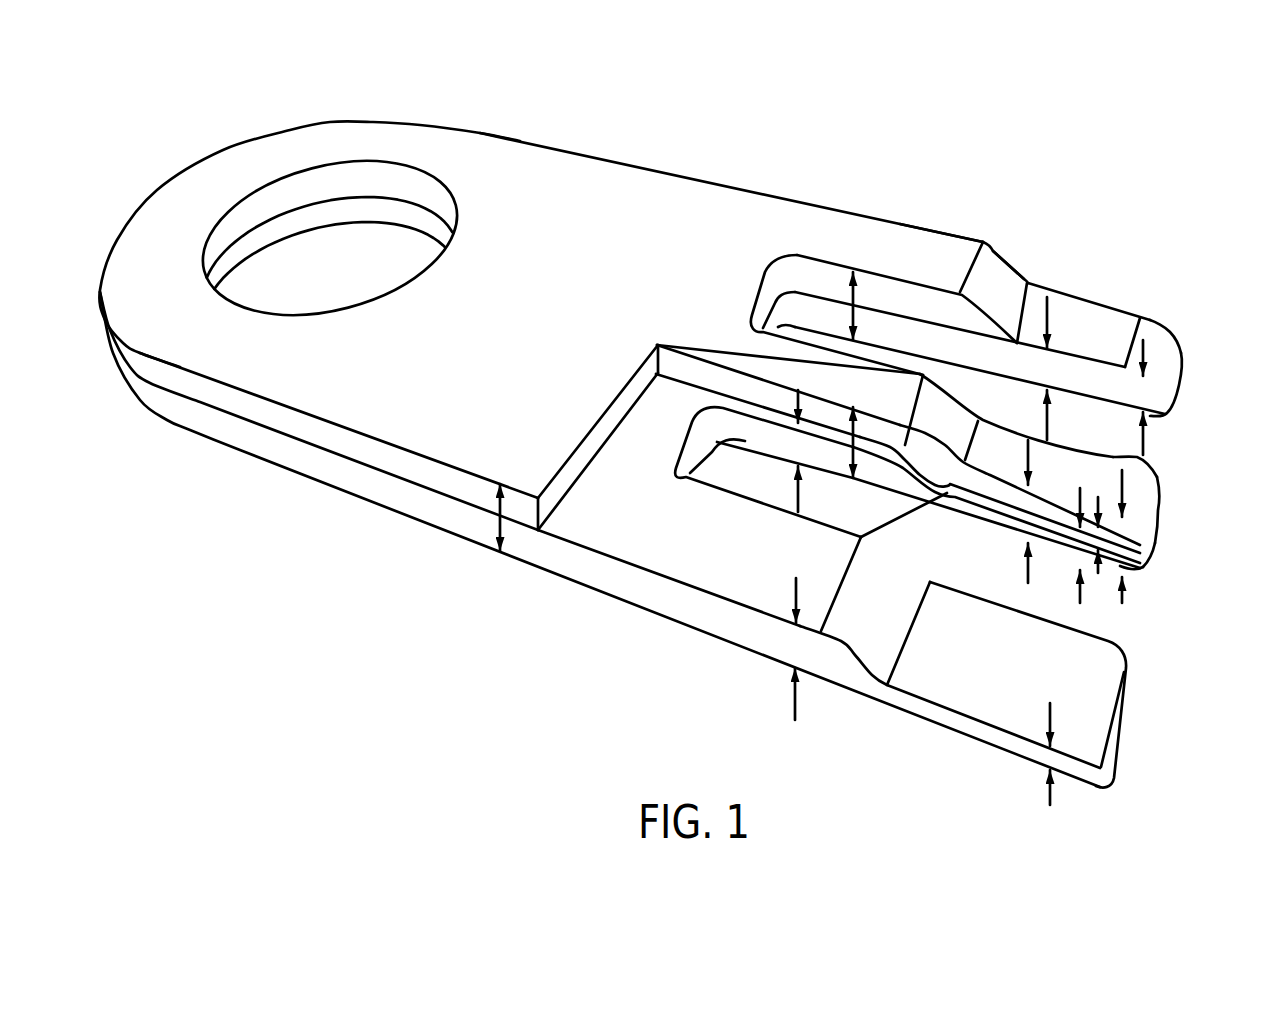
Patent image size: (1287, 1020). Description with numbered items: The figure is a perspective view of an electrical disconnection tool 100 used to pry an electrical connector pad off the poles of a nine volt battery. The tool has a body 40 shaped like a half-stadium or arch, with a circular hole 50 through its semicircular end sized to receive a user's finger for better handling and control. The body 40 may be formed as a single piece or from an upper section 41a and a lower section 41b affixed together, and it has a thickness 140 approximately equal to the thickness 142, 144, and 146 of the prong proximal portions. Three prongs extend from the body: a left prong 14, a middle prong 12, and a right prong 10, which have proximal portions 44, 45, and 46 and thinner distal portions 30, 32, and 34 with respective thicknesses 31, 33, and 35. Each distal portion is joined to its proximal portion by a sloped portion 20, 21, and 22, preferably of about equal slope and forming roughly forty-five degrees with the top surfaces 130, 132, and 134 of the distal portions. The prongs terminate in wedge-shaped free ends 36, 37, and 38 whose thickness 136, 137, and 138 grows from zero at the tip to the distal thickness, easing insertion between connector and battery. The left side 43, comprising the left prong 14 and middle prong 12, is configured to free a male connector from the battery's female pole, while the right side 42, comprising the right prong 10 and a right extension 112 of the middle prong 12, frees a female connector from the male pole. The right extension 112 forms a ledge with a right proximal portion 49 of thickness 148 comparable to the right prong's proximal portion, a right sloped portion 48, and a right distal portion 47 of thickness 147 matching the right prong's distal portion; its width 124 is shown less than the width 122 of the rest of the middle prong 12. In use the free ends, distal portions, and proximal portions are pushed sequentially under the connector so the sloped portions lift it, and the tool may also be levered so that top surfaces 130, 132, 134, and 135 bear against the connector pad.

The electrical disconnection tool 100 is at (313, 522).
The hole 50 is at (280, 226).
The middle prong 12 is at (731, 327).
The right prong 10 is at (742, 637).
The body 40 is at (488, 410).
The thickness of body 140 is at (505, 530).
The upper section 41a is at (265, 413).
The lower section 41b is at (205, 417).
The right side 42 is at (610, 547).
The proximal portion 44 is at (773, 590).
The left side 43 is at (735, 203).
The proximal portion 45 is at (838, 365).
The left prong 14 is at (878, 245).
The proximal portion 46 is at (947, 255).
The sloped portion 22 is at (1003, 282).
The sloped portion 21 is at (942, 397).
The distal portion 34 is at (1057, 298).
The thickness of distal portion 35 is at (1047, 314).
The thickness of free end 138 is at (1164, 338).
The free end 38 is at (1163, 375).
The top surface 134 is at (1079, 349).
The top surface 132 is at (1041, 479).
The top surface 130 is at (934, 677).
The thickness of proximal portion 146 is at (835, 335).
The wall height 148 is at (798, 388).
The right extension 112 is at (752, 407).
The thickness of proximal portion 142 is at (796, 578).
The right proximal portion 49 is at (850, 480).
The thickness of proximal portion 144 is at (834, 450).
The thickness of free end 137 is at (1114, 470).
The top surface 135 is at (981, 500).
The distal portion 32 is at (1120, 462).
The width of middle prong 122 is at (1157, 503).
The free end 37 is at (1143, 527).
The width of right extension 124 is at (1147, 550).
The right distal portion 47 is at (1128, 572).
The right sloped portion 48 is at (887, 545).
The sloped portion 20 is at (872, 663).
The thickness of distal portion 33 is at (1017, 582).
The thickness of right distal portion 147 is at (1080, 592).
The thickness of free end 136 is at (1113, 707).
The free end 36 is at (1128, 762).
The distal portion 30 is at (992, 705).
The thickness of distal portion 31 is at (1052, 805).